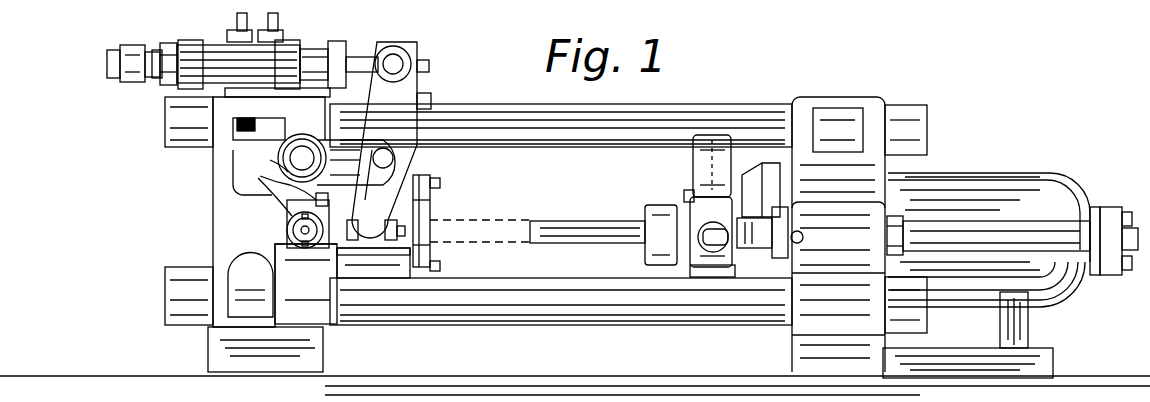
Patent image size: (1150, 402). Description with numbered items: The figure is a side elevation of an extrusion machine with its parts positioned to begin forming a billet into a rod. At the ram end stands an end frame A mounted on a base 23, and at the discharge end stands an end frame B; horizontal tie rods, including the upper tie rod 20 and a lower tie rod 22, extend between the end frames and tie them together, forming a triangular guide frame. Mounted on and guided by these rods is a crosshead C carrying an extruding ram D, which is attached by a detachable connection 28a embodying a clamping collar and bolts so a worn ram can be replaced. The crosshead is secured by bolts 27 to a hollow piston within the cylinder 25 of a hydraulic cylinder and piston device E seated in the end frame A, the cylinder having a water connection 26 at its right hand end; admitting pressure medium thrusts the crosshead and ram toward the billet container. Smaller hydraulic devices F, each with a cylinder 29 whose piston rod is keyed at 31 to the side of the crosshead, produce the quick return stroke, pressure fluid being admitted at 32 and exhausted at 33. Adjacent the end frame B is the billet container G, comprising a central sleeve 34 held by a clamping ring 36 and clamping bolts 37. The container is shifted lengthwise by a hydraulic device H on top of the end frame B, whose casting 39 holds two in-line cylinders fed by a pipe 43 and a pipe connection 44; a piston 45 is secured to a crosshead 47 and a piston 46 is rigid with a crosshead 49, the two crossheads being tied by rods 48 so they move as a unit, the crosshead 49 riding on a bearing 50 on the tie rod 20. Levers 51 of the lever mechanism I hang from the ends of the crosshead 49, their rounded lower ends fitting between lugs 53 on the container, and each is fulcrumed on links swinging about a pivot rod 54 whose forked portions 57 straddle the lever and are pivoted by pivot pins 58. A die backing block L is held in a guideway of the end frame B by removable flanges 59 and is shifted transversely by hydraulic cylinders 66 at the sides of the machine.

The tie rod 20 is at (700, 112).
The tie rod 22 is at (492, 318).
The base 23 is at (797, 356).
The cylinder 25 is at (952, 176).
The water connection 26 is at (1124, 214).
The bolts 27 is at (684, 195).
The detachable connection 28a is at (645, 212).
The cylinder 29 is at (912, 232).
The key connection 31 is at (722, 244).
The pressure fluid admission 32 is at (804, 237).
The exhaust 33 is at (1132, 264).
The sleeve 34 is at (455, 216).
The clamping ring 36 is at (441, 266).
The clamping bolts 37 is at (441, 182).
The casting 39 is at (210, 50).
The pipe 43 is at (237, 20).
The pipe connection 44 is at (284, 20).
The piston 45 is at (157, 55).
The piston 46 is at (360, 52).
The crosshead 47 is at (130, 80).
The rods 48 is at (158, 80).
The crosshead 49 is at (411, 47).
The bearing 50 is at (432, 100).
The levers 51 is at (400, 98).
The lugs 53 is at (400, 234).
The pivot rod 54 is at (302, 158).
The forked portions 57 is at (413, 162).
The pivot pins 58 is at (430, 160).
The removable flanges 59 is at (268, 159).
The hydraulic cylinders 66 is at (288, 238).
The end frame A is at (859, 220).
The end frame B is at (251, 230).
The crosshead C is at (731, 206).
The extruding ram D is at (587, 222).
The hydraulic cylinder and piston device E is at (989, 240).
The hydraulic cylinder and piston devices F is at (996, 236).
The billet container G is at (434, 221).
The hydraulic device H is at (312, 30).
The lever mechanism I is at (384, 140).
The die backing block L is at (284, 191).